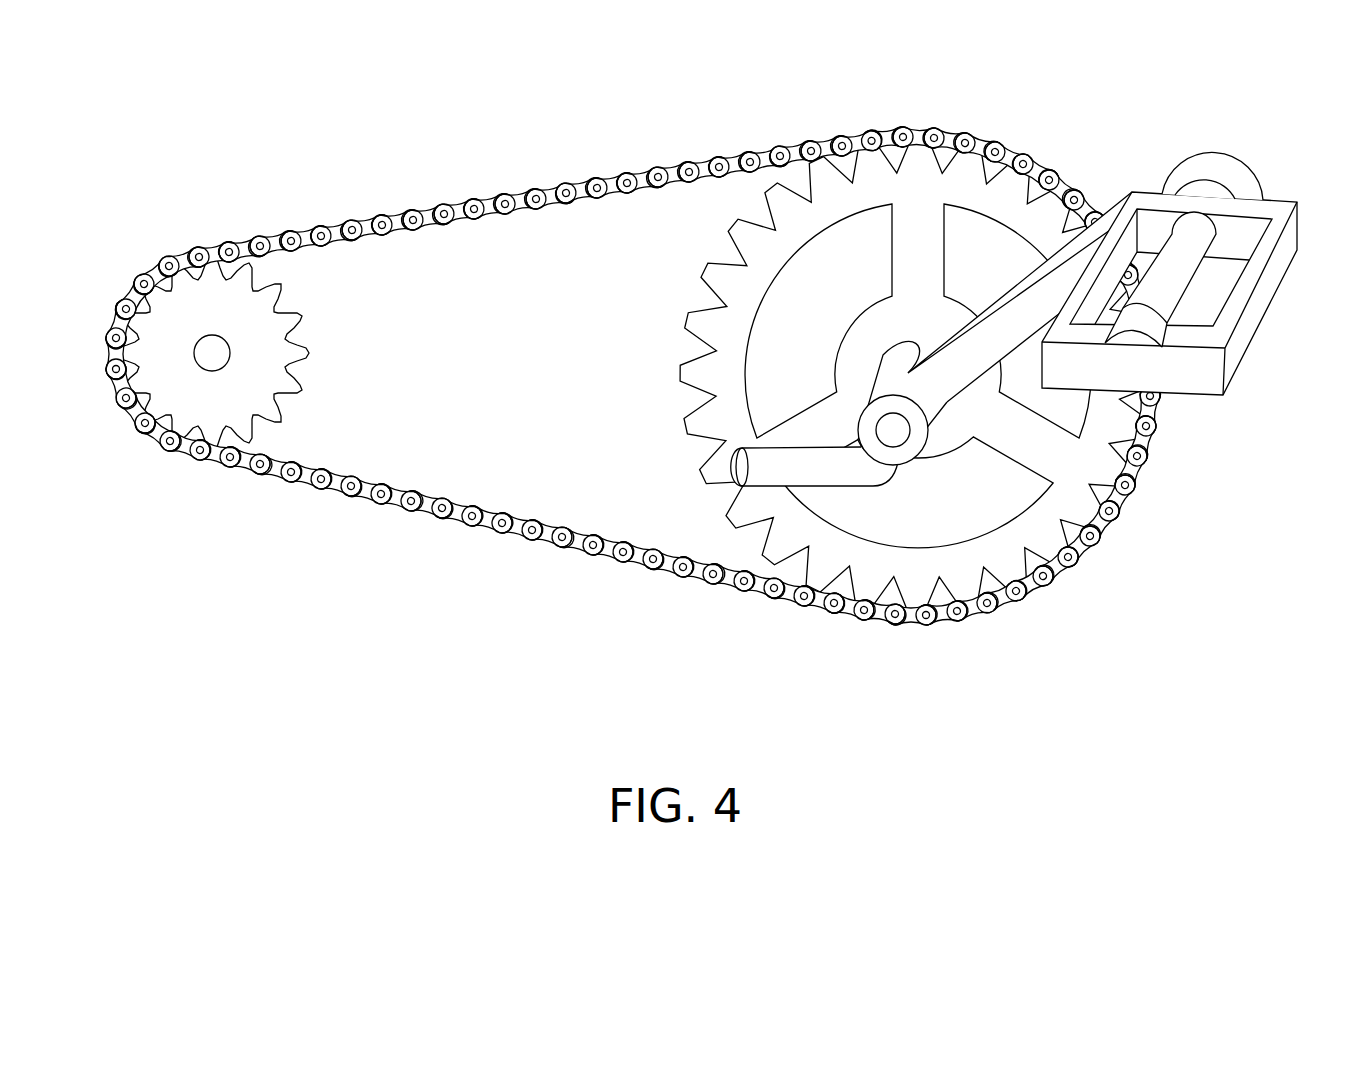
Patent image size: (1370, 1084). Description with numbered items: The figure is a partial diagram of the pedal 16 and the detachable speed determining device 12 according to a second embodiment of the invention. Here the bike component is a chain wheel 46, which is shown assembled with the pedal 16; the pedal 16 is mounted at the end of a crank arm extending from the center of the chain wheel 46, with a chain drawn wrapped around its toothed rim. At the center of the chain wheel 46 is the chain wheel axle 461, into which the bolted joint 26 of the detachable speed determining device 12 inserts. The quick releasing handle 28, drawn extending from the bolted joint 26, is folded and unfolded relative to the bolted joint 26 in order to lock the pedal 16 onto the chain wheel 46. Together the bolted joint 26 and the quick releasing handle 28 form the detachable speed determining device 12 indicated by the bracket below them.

The chain wheel 46 is at (921, 222).
The chain wheel axle 461 is at (940, 403).
The detachable speed determining device 12 is at (919, 545).
The quick releasing handle 28 is at (763, 473).
The bolted joint 26 is at (893, 442).
The pedal 16 is at (1265, 295).